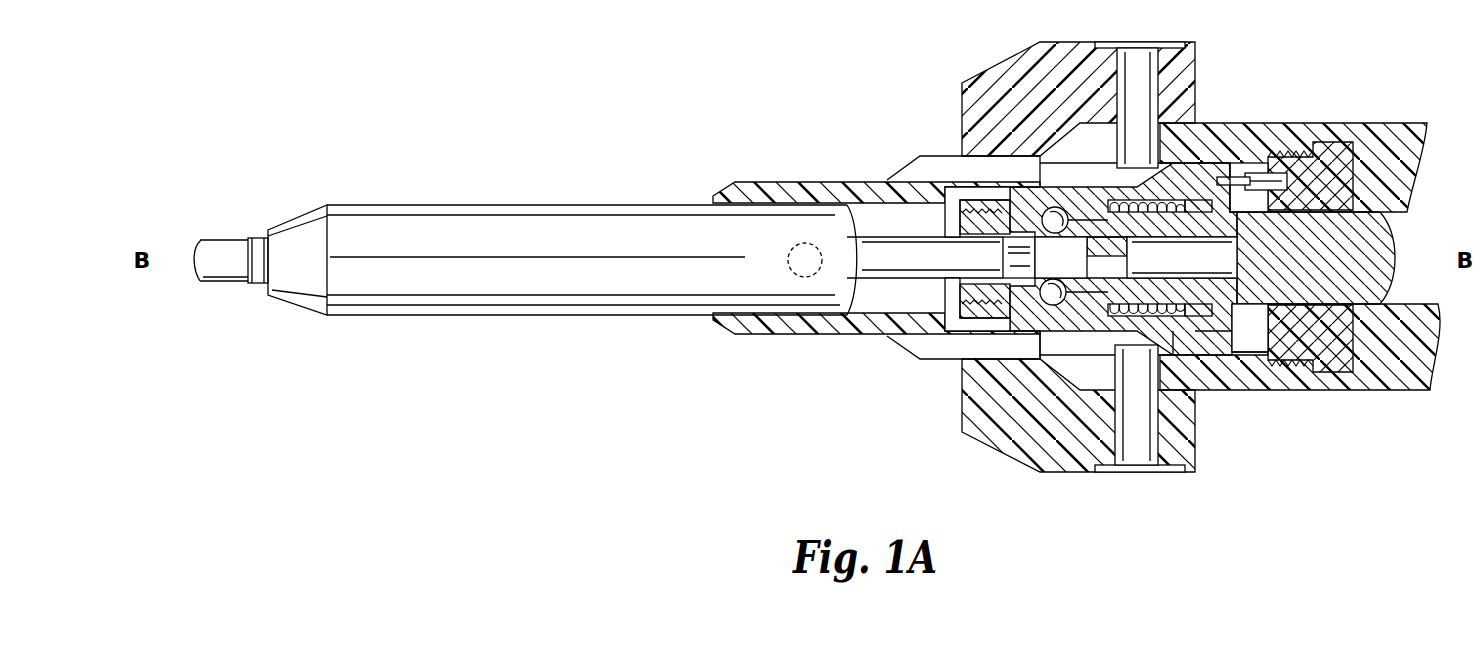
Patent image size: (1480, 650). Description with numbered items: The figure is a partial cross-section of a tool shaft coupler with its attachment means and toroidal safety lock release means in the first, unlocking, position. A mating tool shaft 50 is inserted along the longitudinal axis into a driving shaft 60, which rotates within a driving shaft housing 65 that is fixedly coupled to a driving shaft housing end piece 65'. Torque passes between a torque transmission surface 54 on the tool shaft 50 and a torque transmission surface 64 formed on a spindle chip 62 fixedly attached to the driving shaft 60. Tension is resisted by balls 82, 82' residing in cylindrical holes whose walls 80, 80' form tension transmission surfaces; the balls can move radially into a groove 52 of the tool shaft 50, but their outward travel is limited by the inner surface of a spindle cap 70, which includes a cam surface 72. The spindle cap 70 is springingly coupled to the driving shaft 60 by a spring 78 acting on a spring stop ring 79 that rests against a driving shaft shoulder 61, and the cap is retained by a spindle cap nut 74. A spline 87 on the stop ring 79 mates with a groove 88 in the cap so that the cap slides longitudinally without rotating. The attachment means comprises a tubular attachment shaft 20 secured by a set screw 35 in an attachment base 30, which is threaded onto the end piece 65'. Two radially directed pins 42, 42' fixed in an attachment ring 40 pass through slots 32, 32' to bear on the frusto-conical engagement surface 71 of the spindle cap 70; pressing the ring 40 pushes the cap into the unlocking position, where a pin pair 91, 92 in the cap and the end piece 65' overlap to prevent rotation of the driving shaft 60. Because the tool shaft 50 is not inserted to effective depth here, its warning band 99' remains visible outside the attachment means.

The tubular attachment shaft 20 is at (530, 314).
The attachment base 30 is at (836, 335).
The slot 32 is at (1030, 148).
The slot 32' is at (1030, 367).
The set screw 35 is at (794, 248).
The attachment ring 40 is at (998, 63).
The radially directed pin 42 is at (1147, 89).
The radially directed pin 42' is at (1130, 429).
The mating tool shaft 50 is at (232, 238).
The groove 52 is at (1020, 258).
The torque transmission surface 54 is at (1112, 253).
The driving shaft 60 is at (1415, 257).
The driving shaft shoulder 61 is at (1238, 170).
The spindle chip 62 is at (1235, 282).
The torque transmission surface 64 is at (1168, 257).
The driving shaft housing 65 is at (1301, 238).
The driving shaft housing end piece 65' is at (1317, 218).
The spindle cap 70 is at (1235, 358).
The engagement surface 71 is at (1142, 340).
The cam surface 72 is at (1067, 302).
The spindle cap nut 74 is at (960, 301).
The spring 78 is at (1198, 200).
The spring stop ring 79 is at (1250, 343).
The cylindrical hole wall 80 is at (1064, 184).
The cylindrical hole wall 80' is at (1079, 332).
The ball 82 is at (1125, 171).
The ball 82' is at (1117, 343).
The longitudinal spline 87 is at (1205, 346).
The longitudinal groove 88 is at (1190, 346).
The pin 91 is at (1242, 176).
The pin 92 is at (1265, 176).
The warning band 99' is at (227, 279).